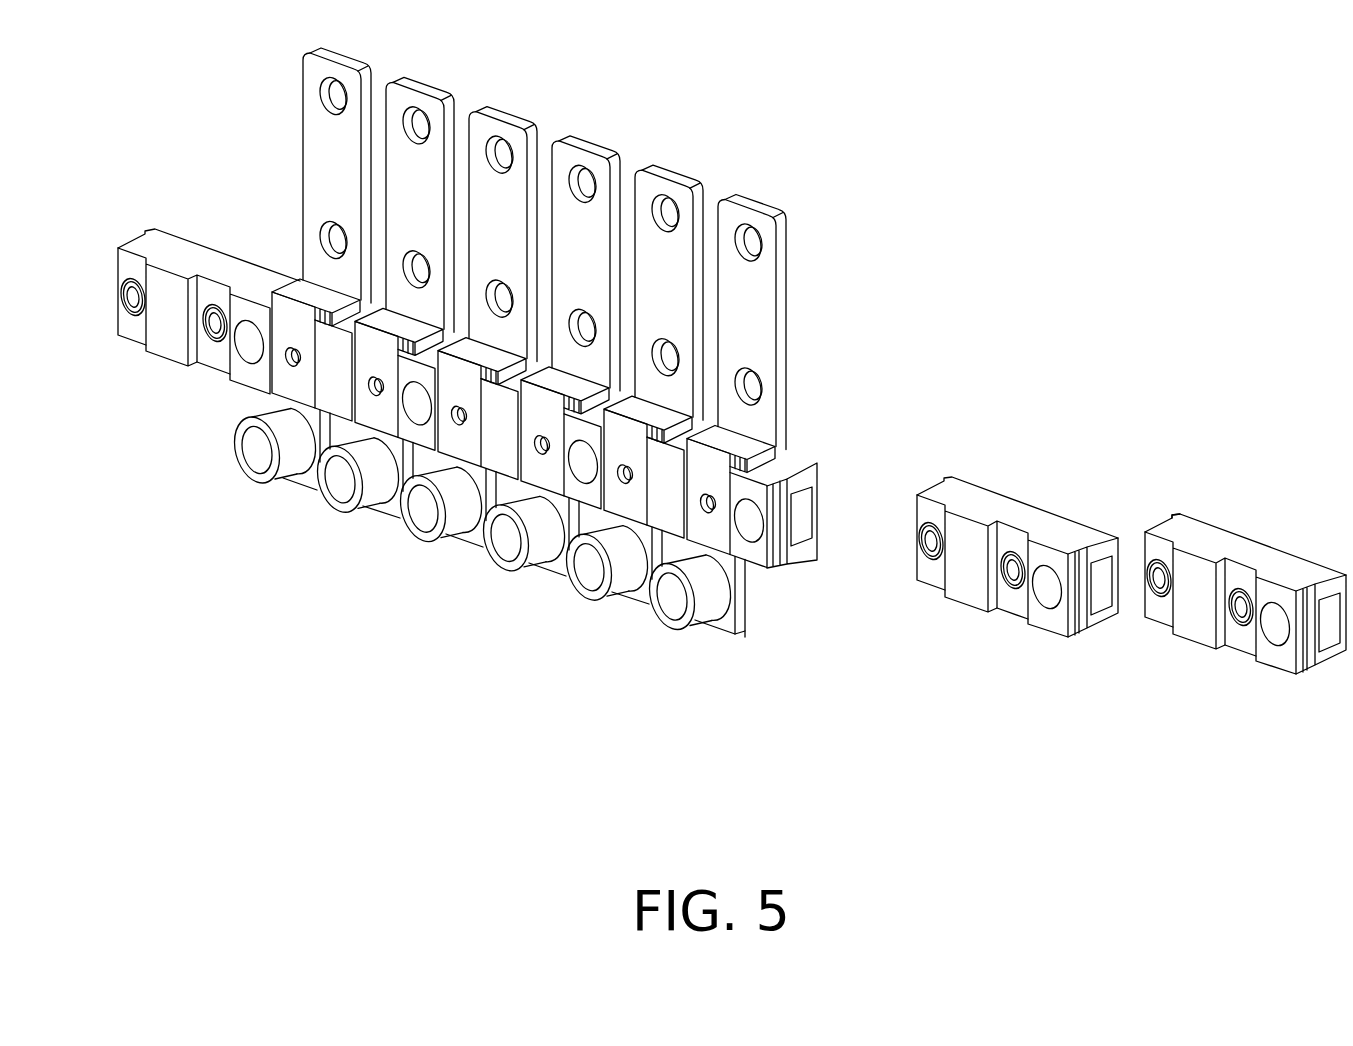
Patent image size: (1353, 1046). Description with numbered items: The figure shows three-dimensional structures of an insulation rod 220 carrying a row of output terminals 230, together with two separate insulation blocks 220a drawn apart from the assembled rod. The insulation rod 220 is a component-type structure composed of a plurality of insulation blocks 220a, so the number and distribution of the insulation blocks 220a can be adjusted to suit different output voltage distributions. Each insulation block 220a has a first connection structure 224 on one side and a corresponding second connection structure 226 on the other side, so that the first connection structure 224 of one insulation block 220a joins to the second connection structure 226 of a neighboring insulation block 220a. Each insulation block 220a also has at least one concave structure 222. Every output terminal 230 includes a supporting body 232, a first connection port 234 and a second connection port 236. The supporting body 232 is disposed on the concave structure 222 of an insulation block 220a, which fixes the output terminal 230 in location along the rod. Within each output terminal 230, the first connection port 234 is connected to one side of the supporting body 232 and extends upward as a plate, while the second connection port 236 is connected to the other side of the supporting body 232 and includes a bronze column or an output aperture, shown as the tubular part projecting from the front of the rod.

The insulation rod 220 is at (1305, 328).
The insulation block 220a is at (1242, 545).
The concave structure 222 is at (1013, 632).
The first connection structure 224 is at (1338, 625).
The second connection structure 226 is at (1167, 518).
The output terminal 230 is at (958, 193).
The supporting body 232 is at (702, 482).
The first connection port 234 is at (743, 290).
The second connection port 236 is at (727, 620).